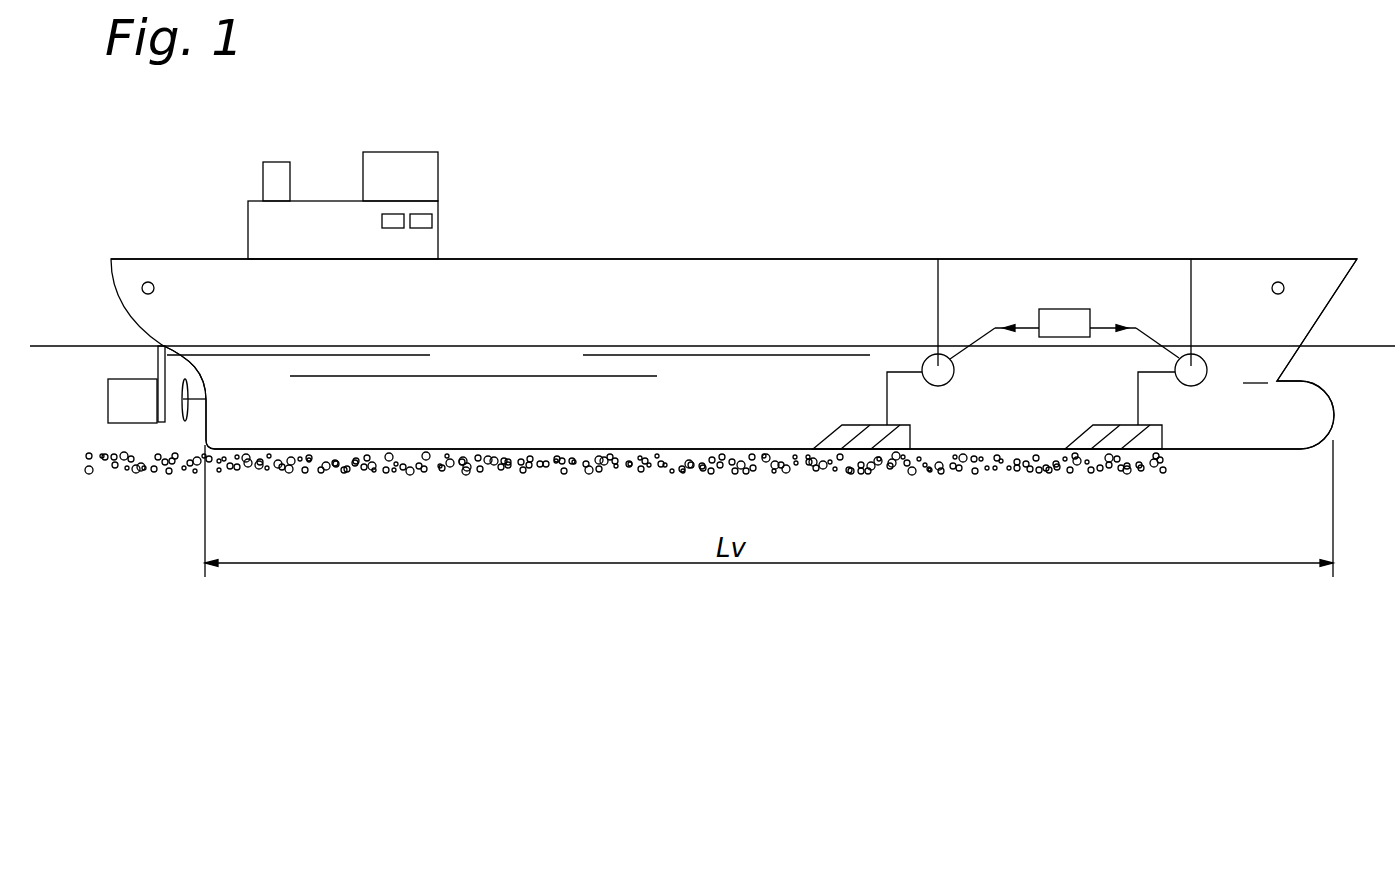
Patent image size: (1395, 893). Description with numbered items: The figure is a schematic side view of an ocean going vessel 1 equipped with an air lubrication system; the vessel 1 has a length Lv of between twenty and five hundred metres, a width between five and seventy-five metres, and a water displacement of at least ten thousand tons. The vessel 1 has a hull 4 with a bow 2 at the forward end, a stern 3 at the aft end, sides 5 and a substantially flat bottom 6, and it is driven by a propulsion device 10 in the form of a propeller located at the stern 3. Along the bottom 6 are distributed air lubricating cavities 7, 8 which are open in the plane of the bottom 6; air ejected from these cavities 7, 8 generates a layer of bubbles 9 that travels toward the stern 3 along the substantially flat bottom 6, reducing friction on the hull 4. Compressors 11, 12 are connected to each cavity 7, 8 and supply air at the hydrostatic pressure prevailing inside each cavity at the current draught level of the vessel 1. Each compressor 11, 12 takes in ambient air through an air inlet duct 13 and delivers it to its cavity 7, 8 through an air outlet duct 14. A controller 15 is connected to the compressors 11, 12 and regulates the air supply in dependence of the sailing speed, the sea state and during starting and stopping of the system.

The vessel 1 is at (149, 231).
The bow 2 is at (1278, 329).
The stern 3 is at (198, 420).
The hull 4 is at (530, 305).
The sides 5 is at (727, 283).
The bottom 6 is at (632, 449).
The air lubricating cavity 7 is at (893, 438).
The air lubricating cavity 8 is at (1127, 438).
The bubbles 9 is at (518, 468).
The propulsion device 10 is at (183, 413).
The compressor 11 is at (920, 366).
The compressor 12 is at (1198, 362).
The air inlet duct 13 is at (942, 300).
The air outlet duct 14 is at (885, 392).
The controller 15 is at (1057, 310).